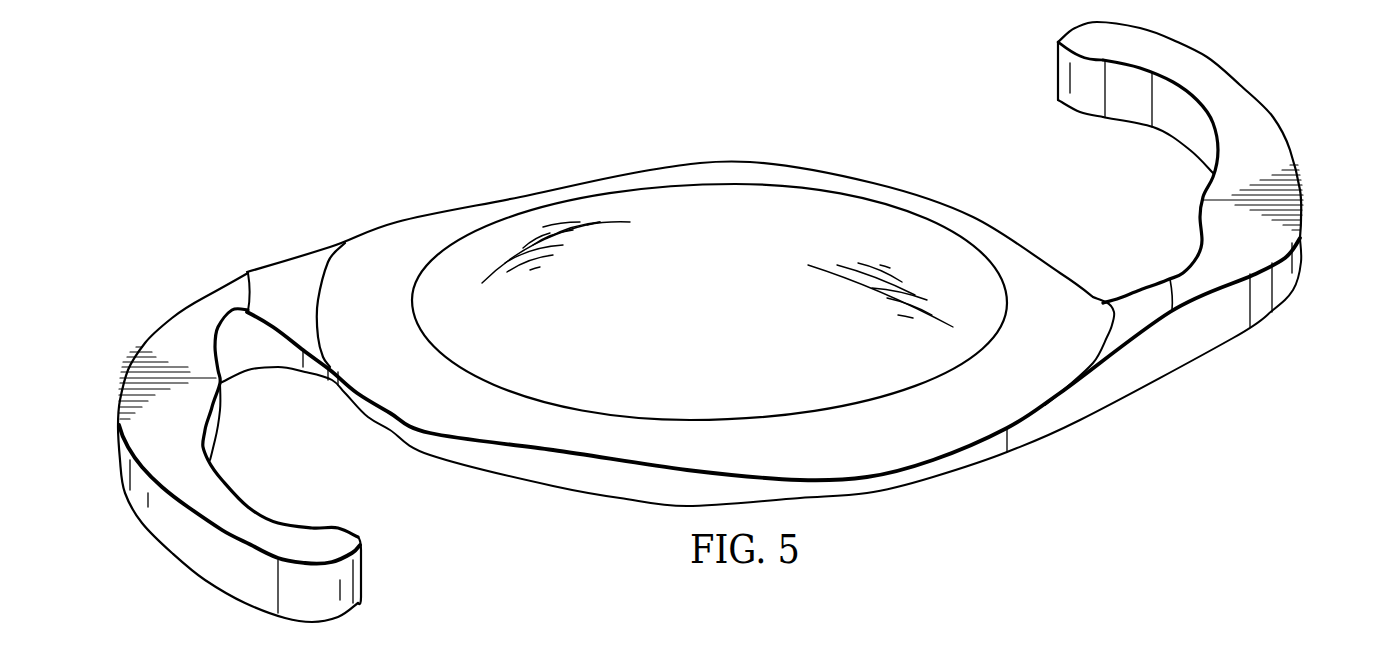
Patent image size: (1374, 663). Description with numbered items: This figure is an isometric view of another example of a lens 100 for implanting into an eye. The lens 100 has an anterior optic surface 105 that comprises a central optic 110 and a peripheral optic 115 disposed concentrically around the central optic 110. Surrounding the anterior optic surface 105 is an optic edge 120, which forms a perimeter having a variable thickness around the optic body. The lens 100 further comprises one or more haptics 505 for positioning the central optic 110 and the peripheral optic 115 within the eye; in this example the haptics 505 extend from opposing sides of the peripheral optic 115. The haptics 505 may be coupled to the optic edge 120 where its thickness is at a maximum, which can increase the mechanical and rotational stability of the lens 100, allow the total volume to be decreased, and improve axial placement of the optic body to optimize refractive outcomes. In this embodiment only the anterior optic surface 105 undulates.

The lens 100 is at (489, 66).
The anterior optic surface 105 is at (840, 156).
The central optic 110 is at (577, 207).
The peripheral optic 115 is at (380, 238).
The optic edge 120 is at (1113, 302).
The haptics 505 is at (167, 320).